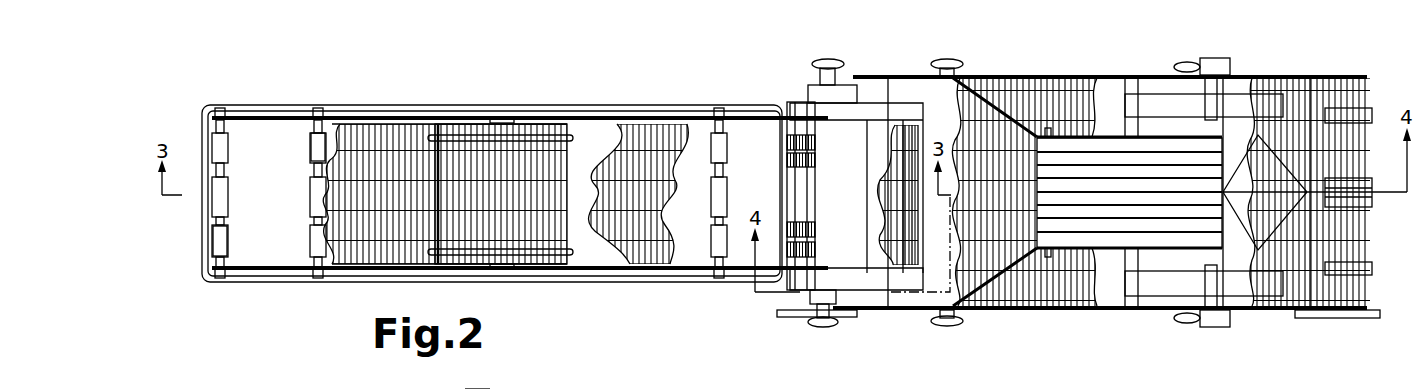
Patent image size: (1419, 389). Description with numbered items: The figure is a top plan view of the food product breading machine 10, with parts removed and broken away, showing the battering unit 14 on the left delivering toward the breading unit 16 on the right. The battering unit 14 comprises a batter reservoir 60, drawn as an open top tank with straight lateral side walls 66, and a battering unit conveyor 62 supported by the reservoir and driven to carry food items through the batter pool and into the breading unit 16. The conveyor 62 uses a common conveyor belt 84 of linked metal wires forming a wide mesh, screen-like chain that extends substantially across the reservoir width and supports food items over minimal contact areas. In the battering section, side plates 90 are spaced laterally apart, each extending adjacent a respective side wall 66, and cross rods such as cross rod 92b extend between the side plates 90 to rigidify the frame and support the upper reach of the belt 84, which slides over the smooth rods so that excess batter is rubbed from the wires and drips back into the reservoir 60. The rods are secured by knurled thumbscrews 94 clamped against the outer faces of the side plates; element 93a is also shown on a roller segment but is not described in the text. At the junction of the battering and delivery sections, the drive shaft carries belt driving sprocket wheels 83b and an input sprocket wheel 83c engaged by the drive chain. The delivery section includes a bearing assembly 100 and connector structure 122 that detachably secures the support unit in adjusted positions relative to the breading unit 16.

The food product breading machine 10 is at (562, 64).
The battering unit 14 is at (366, 88).
The breading unit 16 is at (1113, 324).
The batter reservoir 60 is at (334, 289).
The battering unit conveyor 62 is at (502, 222).
The lateral side walls 66 is at (602, 108).
The conveyor belt 84 is at (385, 147).
The side plates 90 is at (570, 119).
The cross rod 92b is at (313, 137).
The roller segment 93a is at (212, 232).
The thumbscrews 94 is at (222, 108).
The connector structure 122 is at (852, 85).
The belt driving sprocket wheels 83b is at (810, 248).
The input sprocket wheel 83c is at (785, 318).
The bearing assembly 100 is at (470, 388).